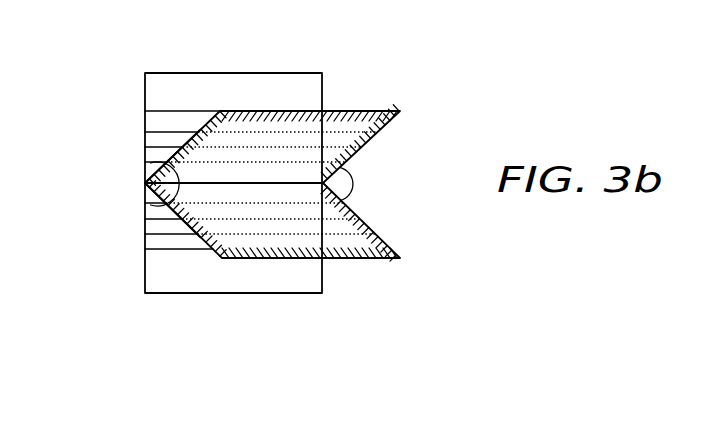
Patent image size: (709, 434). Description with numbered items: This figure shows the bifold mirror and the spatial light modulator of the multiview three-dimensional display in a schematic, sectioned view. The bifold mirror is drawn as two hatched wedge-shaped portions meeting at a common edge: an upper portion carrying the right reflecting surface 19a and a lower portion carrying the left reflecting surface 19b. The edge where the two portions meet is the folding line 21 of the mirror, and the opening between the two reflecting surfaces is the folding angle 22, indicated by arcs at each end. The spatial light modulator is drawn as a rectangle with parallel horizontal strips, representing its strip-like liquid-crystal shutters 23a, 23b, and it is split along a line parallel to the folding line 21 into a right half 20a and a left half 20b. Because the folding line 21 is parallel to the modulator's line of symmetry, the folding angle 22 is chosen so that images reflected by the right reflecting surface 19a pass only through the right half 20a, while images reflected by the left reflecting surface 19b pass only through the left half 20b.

The right reflecting surface 19a is at (368, 136).
The left reflecting surface 19b is at (368, 227).
The right half of the spatial light modulator 20a is at (278, 87).
The left half of the spatial light modulator 20b is at (278, 280).
The folding line and line of symmetry 21 is at (200, 182).
The folding angle 22 is at (147, 216).
The strip-like liquid-crystal shutter 23a is at (150, 167).
The strip-like liquid-crystal shutter 23b is at (150, 197).